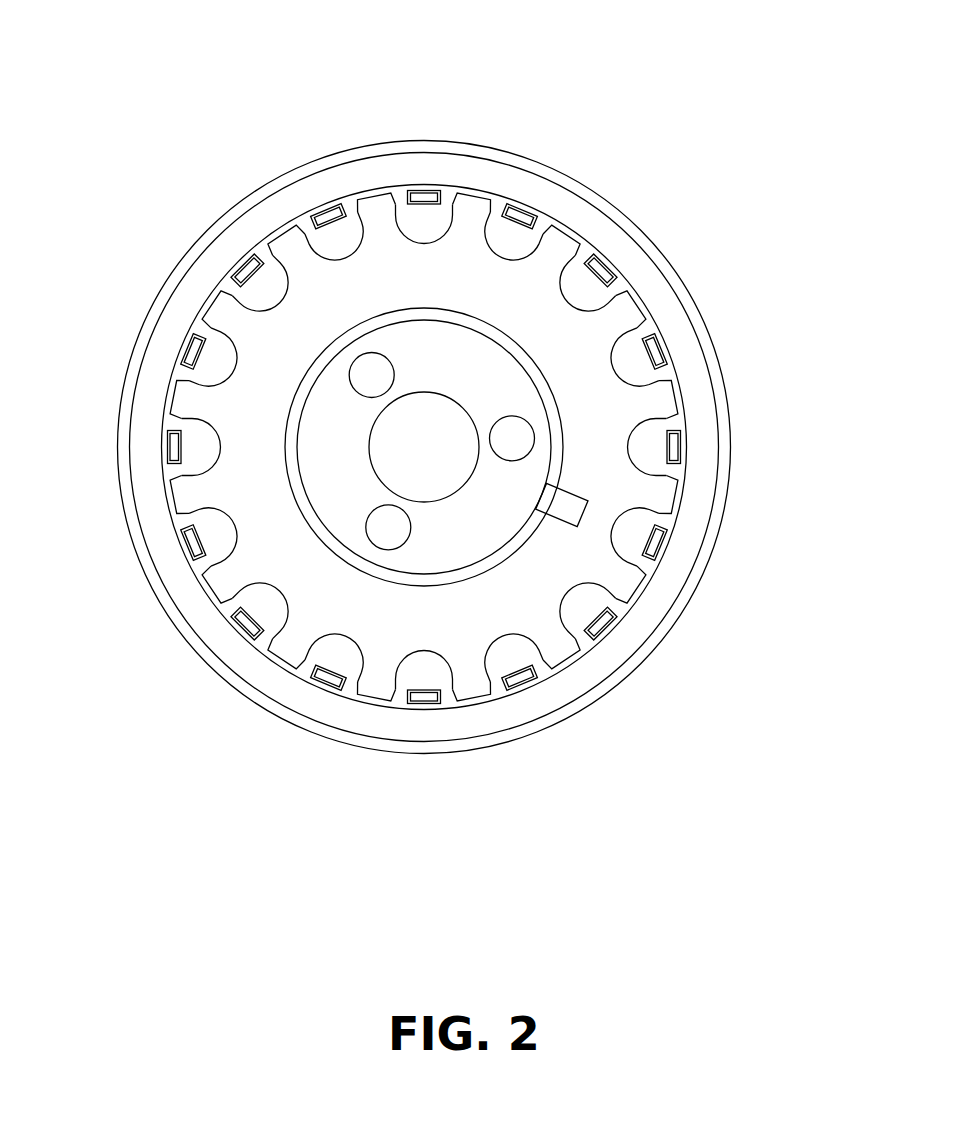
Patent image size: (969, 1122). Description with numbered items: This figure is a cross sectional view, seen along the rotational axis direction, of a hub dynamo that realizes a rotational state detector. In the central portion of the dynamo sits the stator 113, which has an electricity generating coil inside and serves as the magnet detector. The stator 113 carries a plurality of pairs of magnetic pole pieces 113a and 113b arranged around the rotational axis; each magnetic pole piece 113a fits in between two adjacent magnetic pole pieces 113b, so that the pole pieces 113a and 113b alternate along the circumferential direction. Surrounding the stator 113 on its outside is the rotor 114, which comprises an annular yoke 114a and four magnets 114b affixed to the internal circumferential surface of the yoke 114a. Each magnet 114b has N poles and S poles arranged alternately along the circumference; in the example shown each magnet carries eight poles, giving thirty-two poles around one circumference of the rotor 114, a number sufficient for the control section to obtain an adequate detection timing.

The stator 113 is at (516, 407).
The magnetic pole piece 113a is at (671, 530).
The magnetic pole piece 113b is at (640, 583).
The rotor 114 is at (667, 248).
The annular yoke 114a is at (681, 289).
The magnet 114b is at (511, 176).